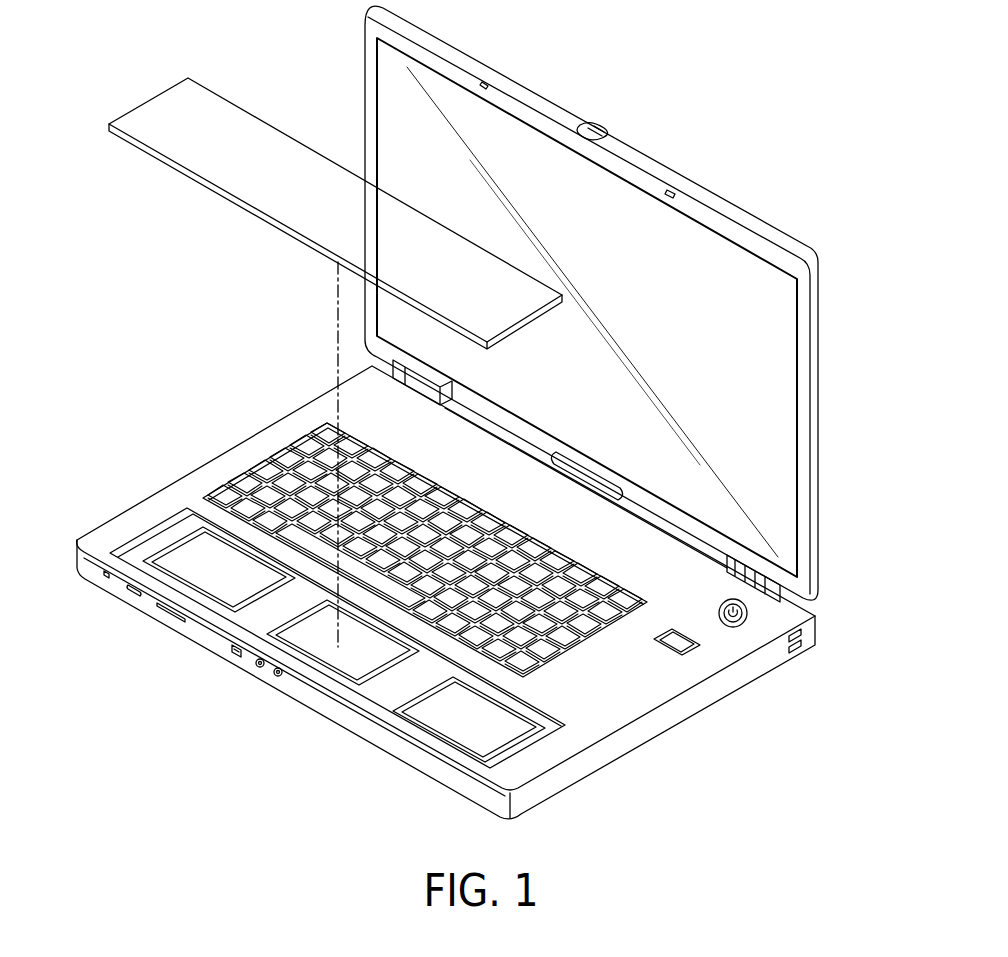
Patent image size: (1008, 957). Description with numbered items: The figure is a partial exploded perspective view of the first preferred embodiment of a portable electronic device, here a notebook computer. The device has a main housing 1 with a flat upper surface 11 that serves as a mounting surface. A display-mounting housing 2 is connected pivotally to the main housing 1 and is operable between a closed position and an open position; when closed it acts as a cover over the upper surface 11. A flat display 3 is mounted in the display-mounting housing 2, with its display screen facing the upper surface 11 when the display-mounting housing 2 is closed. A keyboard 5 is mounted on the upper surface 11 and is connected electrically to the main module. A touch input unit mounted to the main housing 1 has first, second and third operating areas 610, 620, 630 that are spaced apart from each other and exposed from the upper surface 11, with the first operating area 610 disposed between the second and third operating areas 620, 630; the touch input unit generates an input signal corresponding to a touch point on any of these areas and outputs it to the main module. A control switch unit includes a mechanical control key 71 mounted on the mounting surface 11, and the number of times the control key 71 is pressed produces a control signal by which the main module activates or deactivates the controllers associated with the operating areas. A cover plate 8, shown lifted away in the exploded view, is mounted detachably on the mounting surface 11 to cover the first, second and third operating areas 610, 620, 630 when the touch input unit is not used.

The main housing 1 is at (564, 776).
The display-mounting housing 2 is at (820, 427).
The flat display 3 is at (768, 390).
The keyboard 5 is at (565, 592).
The cover plate 8 is at (318, 187).
The upper surface 11 is at (665, 688).
The control key 71 is at (684, 638).
The first operating area 610 is at (330, 655).
The second operating area 620 is at (460, 731).
The third operating area 630 is at (200, 580).